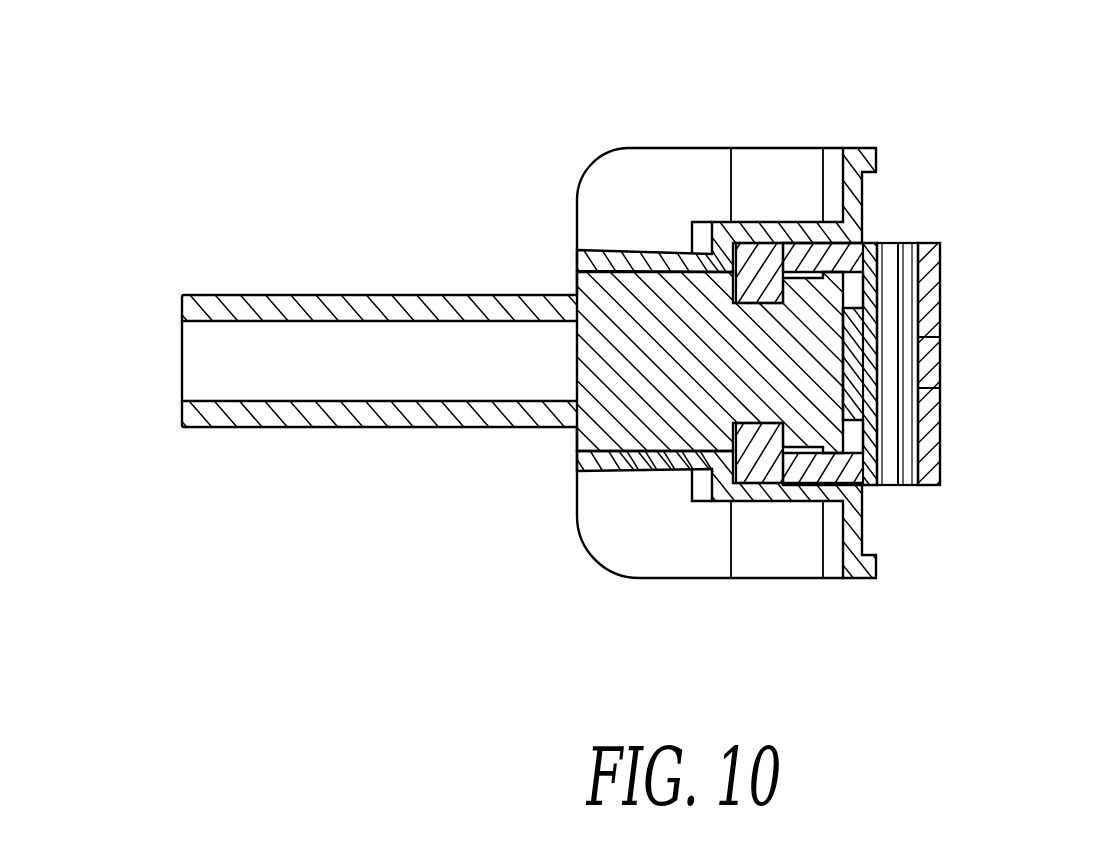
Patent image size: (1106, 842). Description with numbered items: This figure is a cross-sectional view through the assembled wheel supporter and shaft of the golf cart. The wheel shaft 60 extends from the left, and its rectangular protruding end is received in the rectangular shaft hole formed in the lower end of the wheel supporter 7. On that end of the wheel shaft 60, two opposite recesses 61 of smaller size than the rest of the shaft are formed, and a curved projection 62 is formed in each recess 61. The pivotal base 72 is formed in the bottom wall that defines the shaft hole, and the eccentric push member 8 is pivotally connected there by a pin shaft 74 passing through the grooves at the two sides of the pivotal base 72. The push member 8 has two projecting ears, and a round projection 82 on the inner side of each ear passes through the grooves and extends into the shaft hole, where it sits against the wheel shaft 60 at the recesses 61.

The wheel supporter 7 is at (838, 147).
The eccentric push member 8 is at (891, 356).
The wheel shaft 60 is at (313, 308).
The recess 61 is at (748, 318).
The curved projection 62 is at (817, 272).
The pivotal base 72 is at (943, 360).
The pin shaft 74 is at (897, 290).
The round projection 82 is at (757, 290).